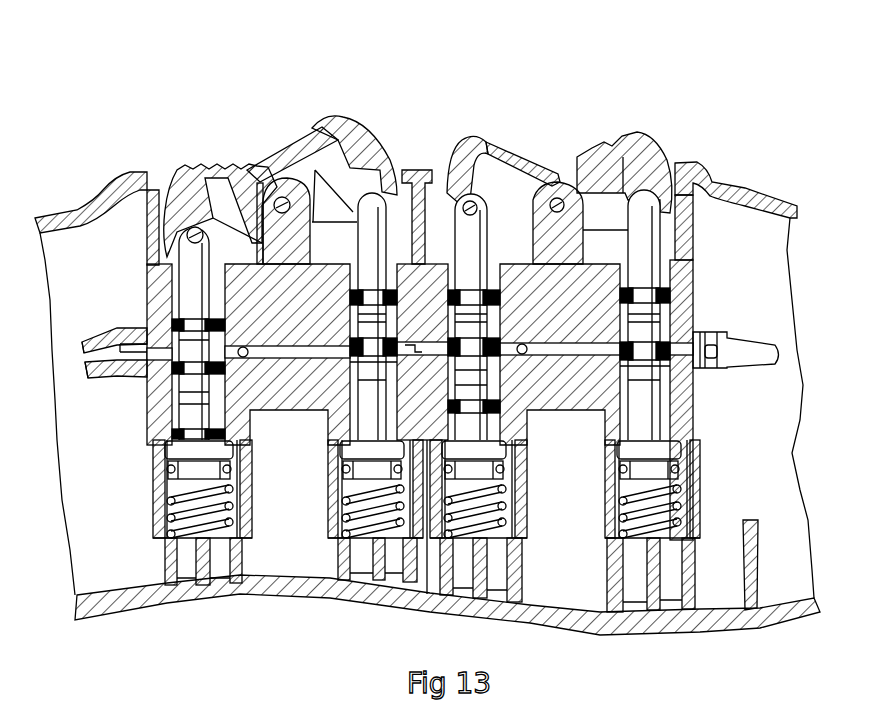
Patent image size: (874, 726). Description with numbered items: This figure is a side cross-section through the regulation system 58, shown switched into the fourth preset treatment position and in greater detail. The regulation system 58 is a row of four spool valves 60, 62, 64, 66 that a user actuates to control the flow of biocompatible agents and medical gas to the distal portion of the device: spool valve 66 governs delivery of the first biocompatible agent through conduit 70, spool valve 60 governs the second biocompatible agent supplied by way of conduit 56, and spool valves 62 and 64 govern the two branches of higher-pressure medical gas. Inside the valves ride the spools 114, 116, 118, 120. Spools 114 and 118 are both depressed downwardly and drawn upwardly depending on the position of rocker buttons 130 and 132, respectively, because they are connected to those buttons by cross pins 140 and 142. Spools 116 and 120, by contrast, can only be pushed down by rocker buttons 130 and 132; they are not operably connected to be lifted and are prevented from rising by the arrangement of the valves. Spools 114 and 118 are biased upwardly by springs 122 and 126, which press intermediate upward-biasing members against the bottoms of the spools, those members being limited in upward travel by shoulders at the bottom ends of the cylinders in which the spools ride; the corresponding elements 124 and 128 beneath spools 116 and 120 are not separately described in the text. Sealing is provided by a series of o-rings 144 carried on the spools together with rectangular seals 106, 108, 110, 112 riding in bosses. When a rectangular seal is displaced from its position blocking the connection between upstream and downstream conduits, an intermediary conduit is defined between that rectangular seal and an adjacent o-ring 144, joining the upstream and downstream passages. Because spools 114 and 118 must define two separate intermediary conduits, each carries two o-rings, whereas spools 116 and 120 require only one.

The regulation system 58 is at (203, 75).
The cross pin 140 is at (232, 178).
The rocker button 130 is at (345, 117).
The spool 116 is at (367, 225).
The cross pin 142 is at (473, 207).
The spool 118 is at (521, 182).
The rocker button 132 is at (638, 132).
The spool 120 is at (652, 248).
The spool 114 is at (195, 282).
The o-rings 144 is at (172, 325).
The rectangular seal 112 is at (670, 333).
The conduit 70 is at (755, 358).
The conduit 56 is at (108, 377).
The rectangular seal 106 is at (172, 380).
The rectangular seal 108 is at (340, 367).
The rectangular seal 110 is at (548, 416).
The spring 122 is at (168, 514).
The second spring cage 124 is at (332, 512).
The spring 126 is at (513, 498).
The fourth spring cage 128 is at (690, 487).
The spool valve 60 is at (160, 556).
The spool valve 62 is at (320, 556).
The spool valve 64 is at (542, 545).
The spool valve 66 is at (712, 549).